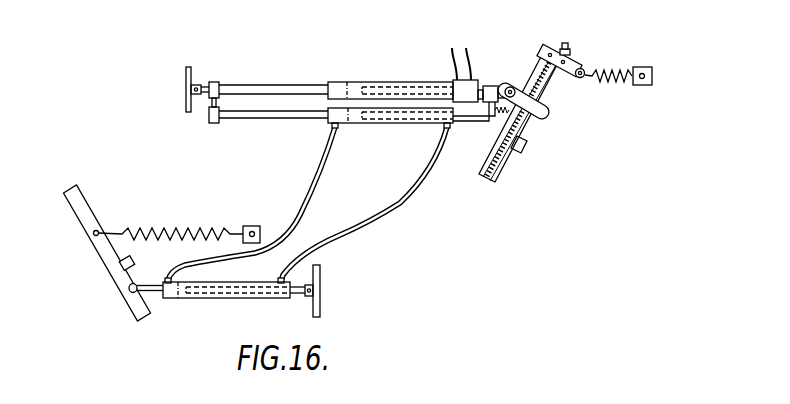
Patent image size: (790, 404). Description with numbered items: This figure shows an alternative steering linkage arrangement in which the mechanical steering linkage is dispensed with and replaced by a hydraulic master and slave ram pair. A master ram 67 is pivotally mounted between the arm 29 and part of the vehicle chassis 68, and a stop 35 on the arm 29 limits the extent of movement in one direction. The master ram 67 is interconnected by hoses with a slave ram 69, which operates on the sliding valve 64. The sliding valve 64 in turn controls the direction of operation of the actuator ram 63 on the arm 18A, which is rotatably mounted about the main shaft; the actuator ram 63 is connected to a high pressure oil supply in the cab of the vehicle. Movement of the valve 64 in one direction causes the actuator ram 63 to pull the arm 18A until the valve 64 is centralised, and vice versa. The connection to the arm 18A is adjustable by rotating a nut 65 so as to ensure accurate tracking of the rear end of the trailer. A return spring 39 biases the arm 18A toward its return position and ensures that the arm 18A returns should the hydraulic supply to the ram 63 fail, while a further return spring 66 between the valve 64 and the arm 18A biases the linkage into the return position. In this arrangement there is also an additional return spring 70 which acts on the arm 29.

The actuator ram 63 is at (357, 82).
The slave ram 69 is at (410, 125).
The sliding valve 64 is at (490, 87).
The return spring 66 is at (502, 116).
The arm 18A is at (505, 170).
The nut 65 is at (546, 112).
The return spring 39 is at (600, 64).
The arm 29 is at (90, 213).
The return spring 70 is at (180, 228).
The stop 35 is at (123, 265).
The master ram 67 is at (232, 298).
The vehicle chassis 68 is at (322, 303).